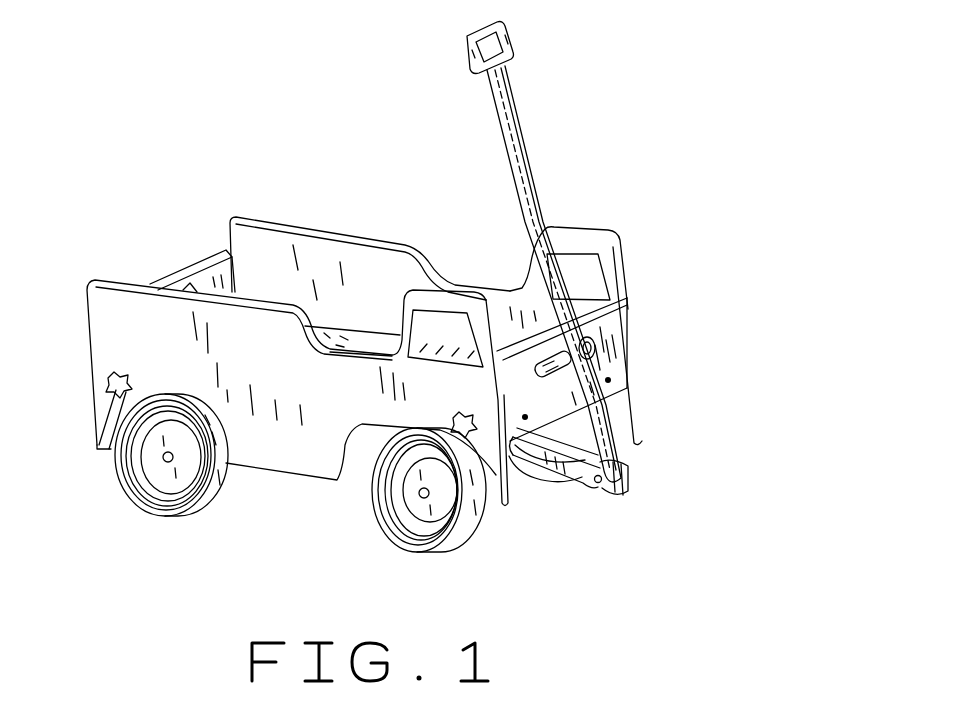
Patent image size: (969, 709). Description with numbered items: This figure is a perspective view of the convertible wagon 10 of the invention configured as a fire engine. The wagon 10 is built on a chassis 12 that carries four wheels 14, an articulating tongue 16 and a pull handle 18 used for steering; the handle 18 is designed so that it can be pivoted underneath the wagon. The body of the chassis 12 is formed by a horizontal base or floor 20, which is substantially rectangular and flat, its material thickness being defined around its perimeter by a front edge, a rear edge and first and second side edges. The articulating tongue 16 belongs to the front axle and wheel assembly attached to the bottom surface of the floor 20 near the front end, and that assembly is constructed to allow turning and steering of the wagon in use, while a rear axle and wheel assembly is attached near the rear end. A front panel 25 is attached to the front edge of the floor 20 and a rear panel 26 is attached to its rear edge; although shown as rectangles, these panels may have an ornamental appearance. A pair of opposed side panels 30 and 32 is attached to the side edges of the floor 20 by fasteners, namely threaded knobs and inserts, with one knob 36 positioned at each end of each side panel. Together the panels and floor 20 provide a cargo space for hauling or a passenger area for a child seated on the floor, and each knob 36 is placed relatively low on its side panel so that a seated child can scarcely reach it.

The wagon 10 is at (688, 289).
The chassis 12 is at (540, 514).
The wheels 14 is at (159, 515).
The articulating tongue 16 is at (578, 488).
The pull handle 18 is at (522, 137).
The floor 20 is at (350, 330).
The front panel 25 is at (612, 357).
The rear panel 26 is at (222, 293).
The side panel 30 is at (269, 348).
The side panel 32 is at (401, 276).
The knob 36 is at (96, 420).